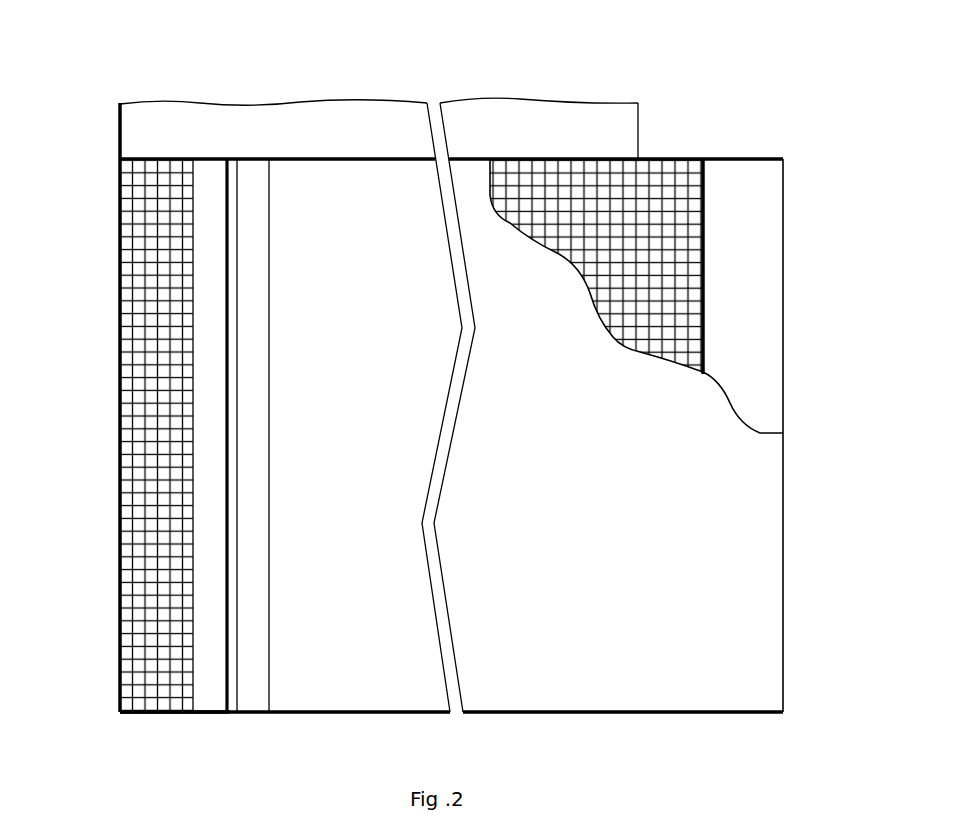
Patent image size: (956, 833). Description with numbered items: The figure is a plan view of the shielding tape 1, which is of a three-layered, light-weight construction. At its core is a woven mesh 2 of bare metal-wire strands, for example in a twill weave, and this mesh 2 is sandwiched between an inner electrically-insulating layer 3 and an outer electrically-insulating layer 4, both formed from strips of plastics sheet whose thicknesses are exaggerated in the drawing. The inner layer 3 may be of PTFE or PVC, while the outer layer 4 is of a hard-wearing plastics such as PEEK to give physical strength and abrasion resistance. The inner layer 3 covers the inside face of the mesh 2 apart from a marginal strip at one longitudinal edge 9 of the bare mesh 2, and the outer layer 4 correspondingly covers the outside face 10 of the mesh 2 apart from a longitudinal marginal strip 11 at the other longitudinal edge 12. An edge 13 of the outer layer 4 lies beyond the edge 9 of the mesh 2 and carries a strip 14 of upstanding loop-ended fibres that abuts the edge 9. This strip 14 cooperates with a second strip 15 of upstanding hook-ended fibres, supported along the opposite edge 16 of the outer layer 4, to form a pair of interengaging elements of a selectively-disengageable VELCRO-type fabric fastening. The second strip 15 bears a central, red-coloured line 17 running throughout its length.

The shielding tape 1 is at (285, 88).
The woven mesh 2 is at (672, 172).
The inner electrically-insulating layer 3 is at (553, 108).
The outer electrically-insulating layer 4 is at (608, 692).
The longitudinal edge of the mesh 9 is at (705, 272).
The outside face of the mesh 10 is at (628, 333).
The longitudinal marginal strip of the outside face 11 is at (128, 298).
The other longitudinal edge of the mesh 12 is at (118, 596).
The edge of the outer layer 13 is at (785, 613).
The strip of upstanding fibres 14 is at (768, 328).
The second strip of upstanding fibres 15 is at (258, 488).
The opposite edge of the outer layer 16 is at (184, 696).
The central red-coloured line 17 is at (232, 600).